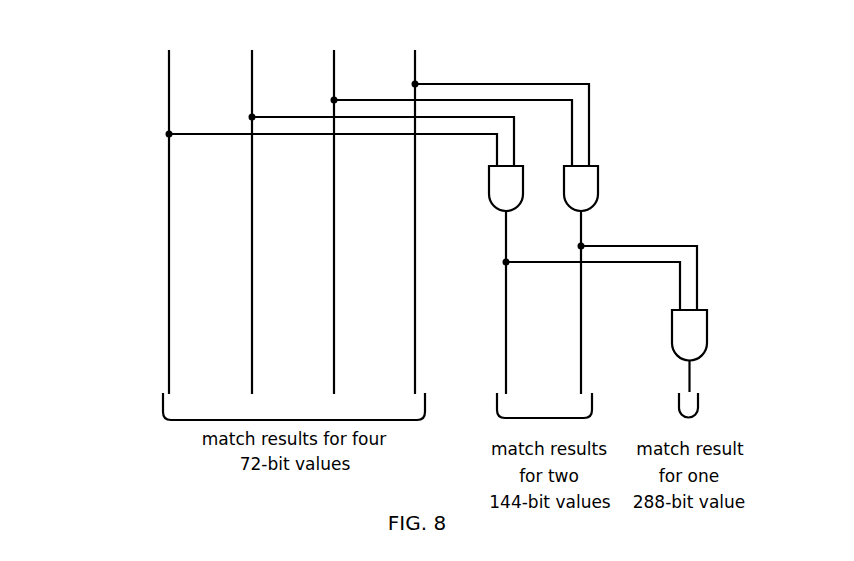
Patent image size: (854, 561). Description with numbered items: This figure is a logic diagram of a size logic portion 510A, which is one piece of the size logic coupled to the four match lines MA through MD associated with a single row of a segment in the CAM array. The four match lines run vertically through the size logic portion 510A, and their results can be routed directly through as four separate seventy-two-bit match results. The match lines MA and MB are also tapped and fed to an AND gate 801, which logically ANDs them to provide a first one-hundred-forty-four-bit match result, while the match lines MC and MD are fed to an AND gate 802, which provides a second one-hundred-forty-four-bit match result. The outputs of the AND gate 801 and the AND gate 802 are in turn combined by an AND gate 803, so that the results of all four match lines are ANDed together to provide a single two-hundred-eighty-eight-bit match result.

The size logic portion 510A is at (130, 113).
The AND gate 801 is at (489, 189).
The AND gate 802 is at (598, 189).
The AND gate 803 is at (707, 333).